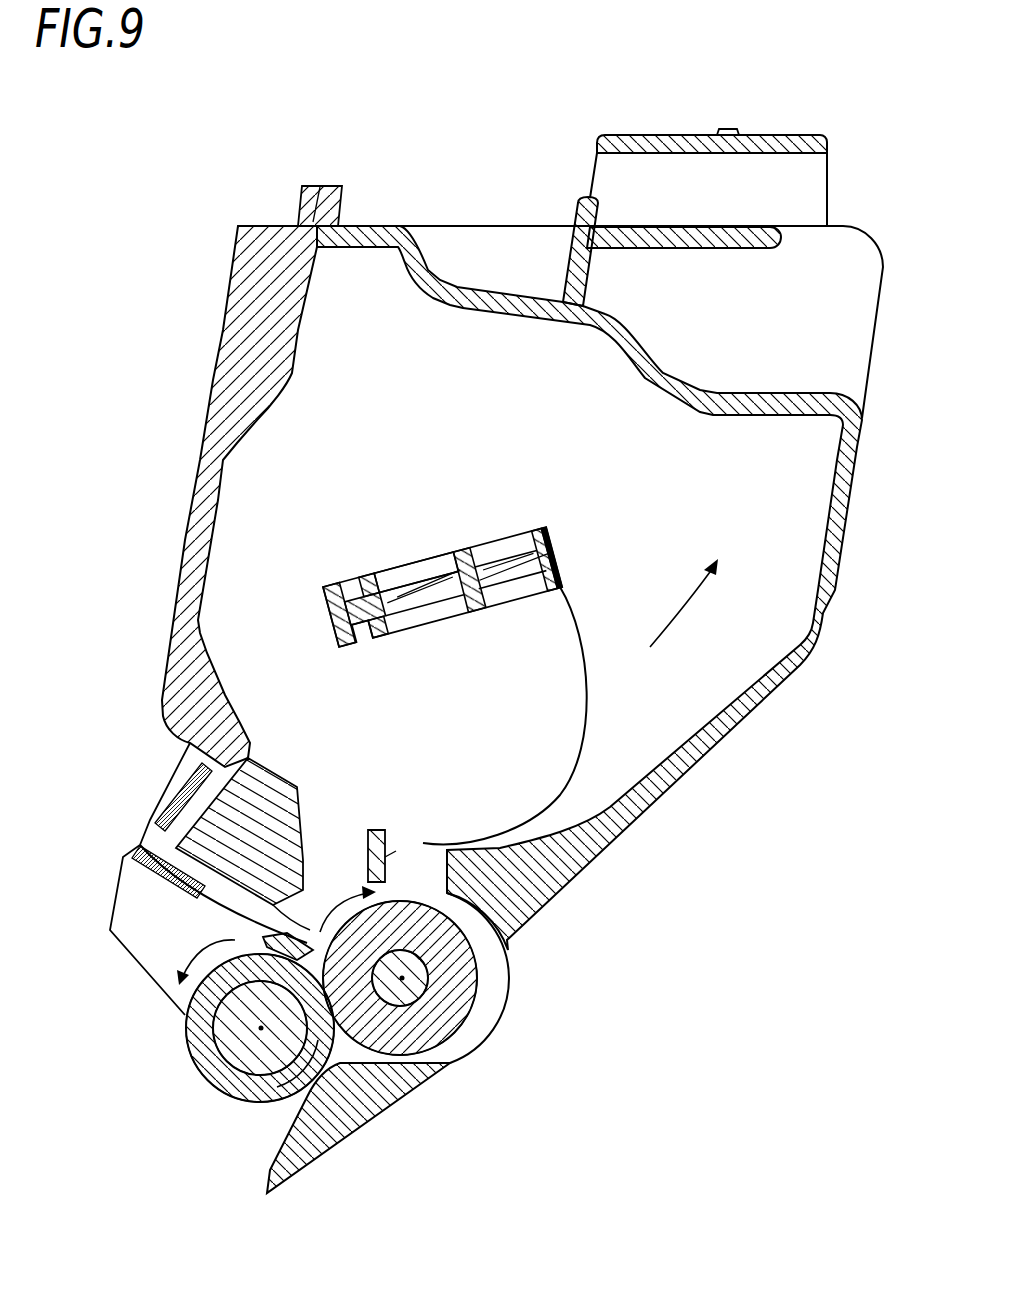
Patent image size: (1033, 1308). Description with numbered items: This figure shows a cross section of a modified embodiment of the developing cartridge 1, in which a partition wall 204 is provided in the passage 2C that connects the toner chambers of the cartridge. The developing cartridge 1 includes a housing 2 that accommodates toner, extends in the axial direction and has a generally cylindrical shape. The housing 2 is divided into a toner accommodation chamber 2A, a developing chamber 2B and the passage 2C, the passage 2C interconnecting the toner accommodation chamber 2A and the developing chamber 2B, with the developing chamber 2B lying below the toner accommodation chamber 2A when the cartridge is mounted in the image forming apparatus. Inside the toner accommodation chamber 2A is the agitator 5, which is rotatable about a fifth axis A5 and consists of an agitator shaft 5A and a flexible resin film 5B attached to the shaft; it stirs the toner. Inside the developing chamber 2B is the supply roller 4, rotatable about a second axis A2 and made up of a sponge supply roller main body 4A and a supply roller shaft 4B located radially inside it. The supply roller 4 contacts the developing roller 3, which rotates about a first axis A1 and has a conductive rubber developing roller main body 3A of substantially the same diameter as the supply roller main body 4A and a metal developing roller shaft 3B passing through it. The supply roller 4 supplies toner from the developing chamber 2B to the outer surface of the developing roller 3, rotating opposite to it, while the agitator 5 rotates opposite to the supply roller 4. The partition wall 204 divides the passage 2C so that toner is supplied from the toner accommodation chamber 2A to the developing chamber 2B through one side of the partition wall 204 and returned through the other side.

The developing cartridge 1 is at (446, 1257).
The housing 2 is at (726, 756).
The toner accommodation chamber 2A is at (752, 572).
The developing chamber 2B is at (325, 898).
The passage 2C is at (340, 800).
The developing roller 3 is at (182, 1063).
The developing roller main body 3A is at (193, 1030).
The developing roller shaft 3B is at (230, 1052).
The supply roller 4 is at (484, 1016).
The supply roller main body 4A is at (443, 1023).
The supply roller shaft 4B is at (418, 970).
The agitator 5 is at (407, 552).
The agitator shaft 5A is at (425, 568).
The film 5B is at (580, 624).
The fifth axis A5 is at (470, 582).
The partition wall 204 is at (400, 840).
The first axis A1 is at (261, 1030).
The second axis A2 is at (402, 982).